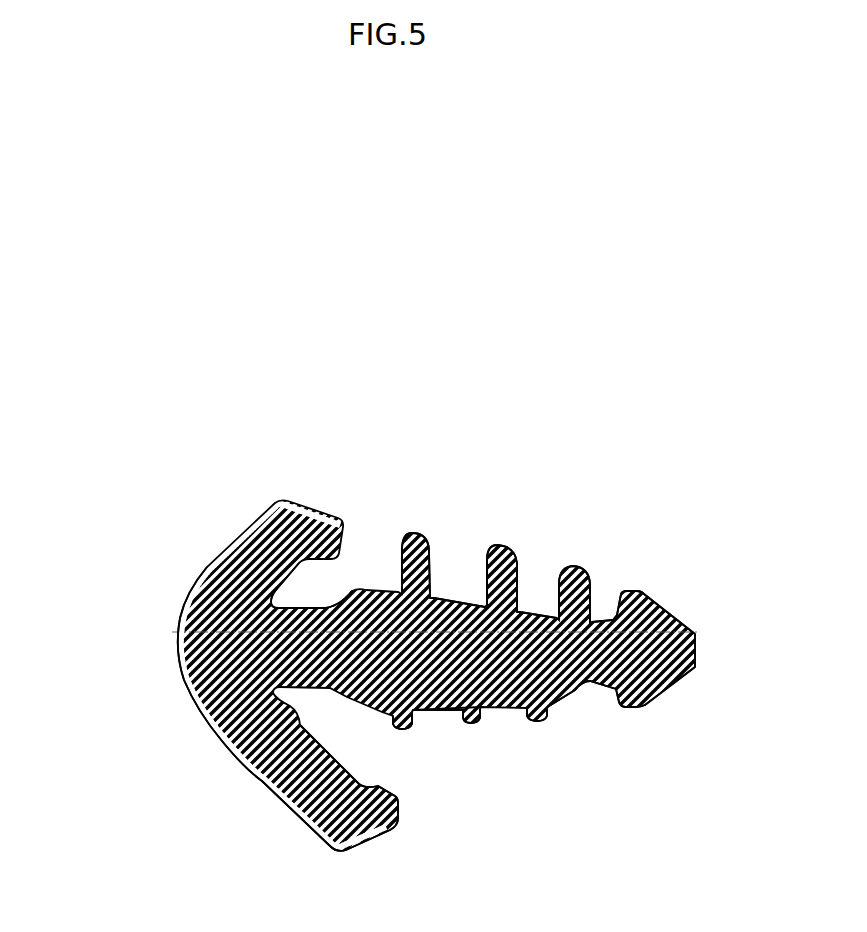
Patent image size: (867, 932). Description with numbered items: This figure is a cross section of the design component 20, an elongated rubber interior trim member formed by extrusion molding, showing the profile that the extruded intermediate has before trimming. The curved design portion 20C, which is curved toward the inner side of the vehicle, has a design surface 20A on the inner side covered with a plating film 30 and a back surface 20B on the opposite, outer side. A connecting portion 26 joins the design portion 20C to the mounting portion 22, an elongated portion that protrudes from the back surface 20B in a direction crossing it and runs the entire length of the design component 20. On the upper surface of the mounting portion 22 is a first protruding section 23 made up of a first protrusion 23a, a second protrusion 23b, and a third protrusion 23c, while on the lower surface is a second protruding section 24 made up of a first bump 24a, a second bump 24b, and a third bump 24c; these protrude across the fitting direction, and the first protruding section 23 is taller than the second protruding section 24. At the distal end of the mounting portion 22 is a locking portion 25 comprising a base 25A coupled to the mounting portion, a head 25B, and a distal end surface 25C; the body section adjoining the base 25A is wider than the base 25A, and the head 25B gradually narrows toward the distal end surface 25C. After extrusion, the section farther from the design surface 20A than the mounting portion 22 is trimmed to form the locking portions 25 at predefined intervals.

The design component 20 is at (433, 625).
The design surface 20A is at (177, 650).
The back surface 20B is at (272, 793).
The design portion 20C is at (202, 717).
The mounting portion 22 is at (585, 685).
The first protruding section 23 is at (502, 506).
The first protrusion 23a is at (417, 533).
The second protrusion 23b is at (500, 543).
The third protrusion 23c is at (573, 567).
The second protruding section 24 is at (483, 801).
The first bump 24a is at (403, 730).
The second bump 24b is at (468, 725).
The third bump 24c is at (537, 721).
The locking portion 25 is at (685, 591).
The base 25A is at (603, 622).
The head 25B is at (665, 628).
The distal end surface 25C is at (731, 593).
The connecting portion 26 is at (329, 604).
The plating film 30 is at (193, 590).